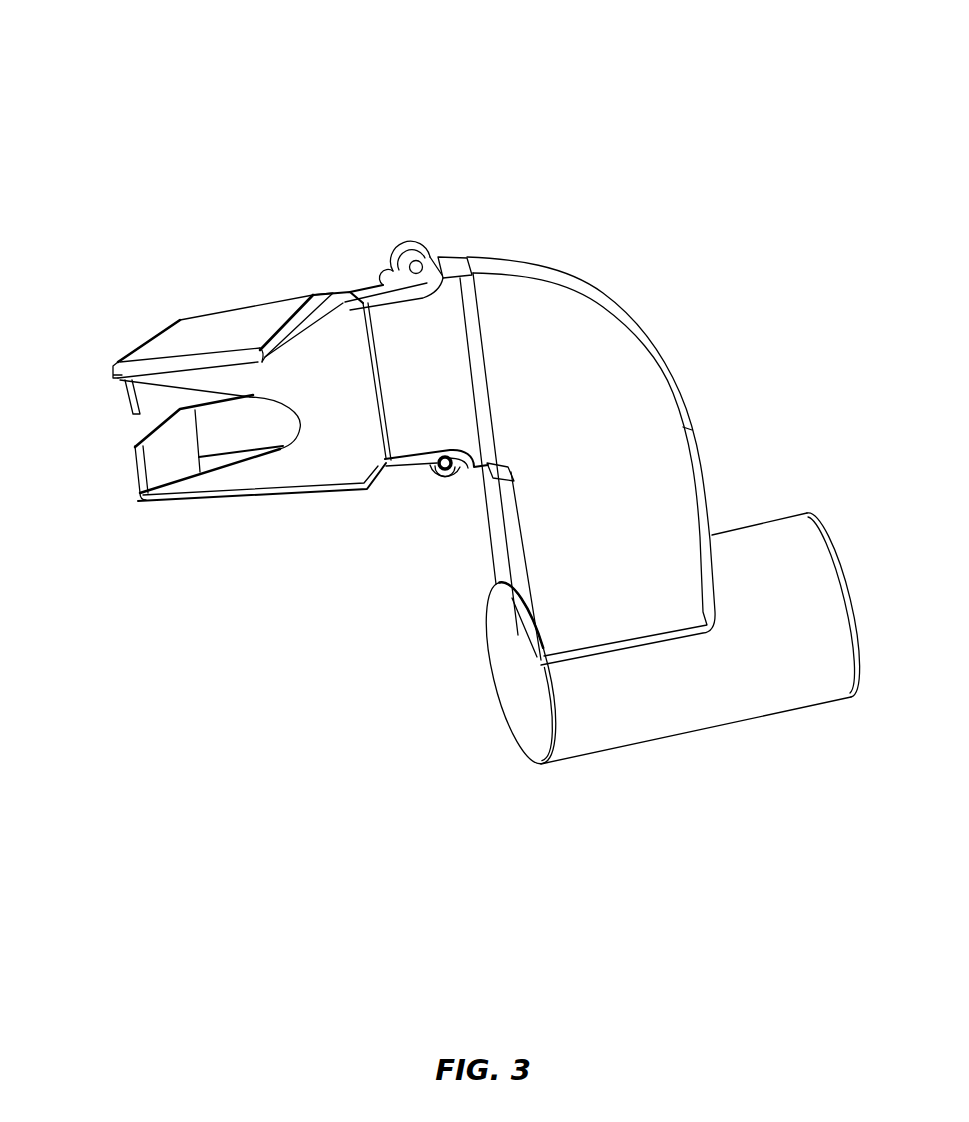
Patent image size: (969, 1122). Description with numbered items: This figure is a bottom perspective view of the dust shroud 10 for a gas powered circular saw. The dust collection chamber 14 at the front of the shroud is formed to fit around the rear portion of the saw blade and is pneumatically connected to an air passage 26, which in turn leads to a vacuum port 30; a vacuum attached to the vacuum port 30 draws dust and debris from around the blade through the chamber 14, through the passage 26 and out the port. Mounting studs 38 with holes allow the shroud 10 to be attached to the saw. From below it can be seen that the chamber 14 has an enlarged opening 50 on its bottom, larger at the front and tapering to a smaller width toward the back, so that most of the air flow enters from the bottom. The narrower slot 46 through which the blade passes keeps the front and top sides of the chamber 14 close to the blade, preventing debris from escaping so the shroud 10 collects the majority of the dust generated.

The dust shroud 10 is at (608, 208).
The dust collection chamber 14 is at (295, 475).
The air passage 26 is at (647, 388).
The vacuum port 30 is at (680, 712).
The mounting studs 38 is at (410, 242).
The slot 46 is at (137, 430).
The enlarged opening 50 is at (207, 468).